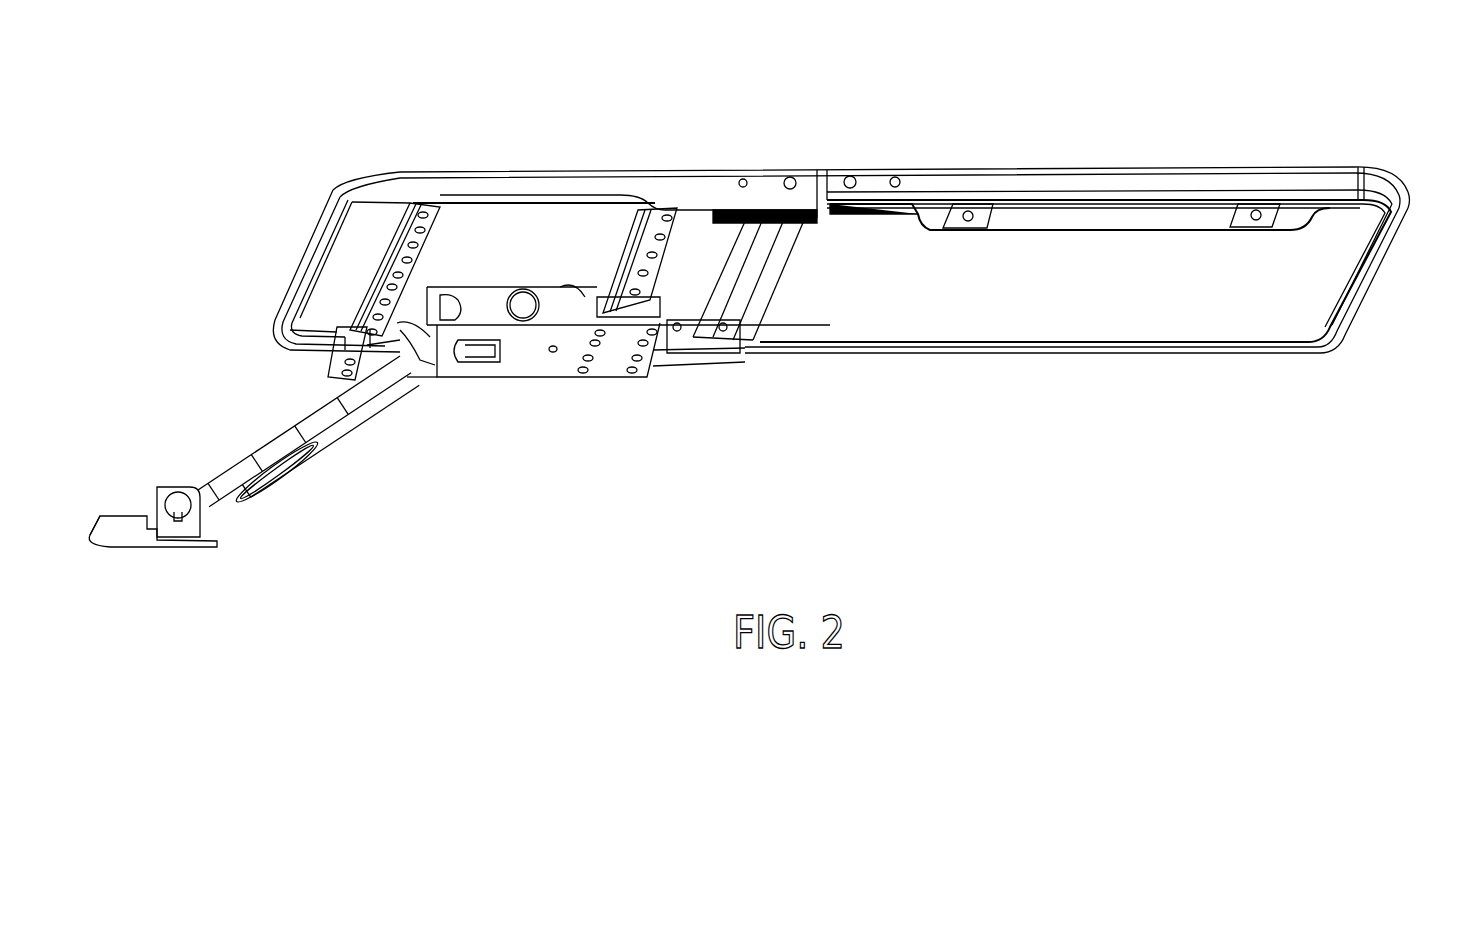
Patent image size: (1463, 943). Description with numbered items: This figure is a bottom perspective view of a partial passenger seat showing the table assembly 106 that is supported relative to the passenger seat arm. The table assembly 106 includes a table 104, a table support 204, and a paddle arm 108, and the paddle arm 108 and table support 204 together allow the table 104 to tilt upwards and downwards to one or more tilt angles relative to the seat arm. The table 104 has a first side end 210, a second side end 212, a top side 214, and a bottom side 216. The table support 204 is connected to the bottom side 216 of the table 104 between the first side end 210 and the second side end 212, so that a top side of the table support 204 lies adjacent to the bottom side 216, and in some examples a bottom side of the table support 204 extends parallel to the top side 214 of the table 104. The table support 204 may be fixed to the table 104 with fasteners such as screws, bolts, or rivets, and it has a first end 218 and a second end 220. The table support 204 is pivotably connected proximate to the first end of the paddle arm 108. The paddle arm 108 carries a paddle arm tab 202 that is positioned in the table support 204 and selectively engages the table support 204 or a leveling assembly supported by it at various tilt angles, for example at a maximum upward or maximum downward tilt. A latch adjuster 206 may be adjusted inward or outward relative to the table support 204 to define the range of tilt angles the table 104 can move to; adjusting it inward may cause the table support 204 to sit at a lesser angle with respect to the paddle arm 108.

The table 104 is at (790, 177).
The table assembly 106 is at (322, 525).
The paddle arm 108 is at (370, 383).
The paddle arm tab 202 is at (443, 363).
The table support 204 is at (543, 424).
The latch adjuster 206 is at (557, 353).
The first side end 210 is at (297, 283).
The second side end 212 is at (1390, 257).
The top side 214 is at (620, 104).
The bottom side 216 is at (1020, 442).
The first end 218 is at (457, 300).
The second end 220 is at (618, 352).